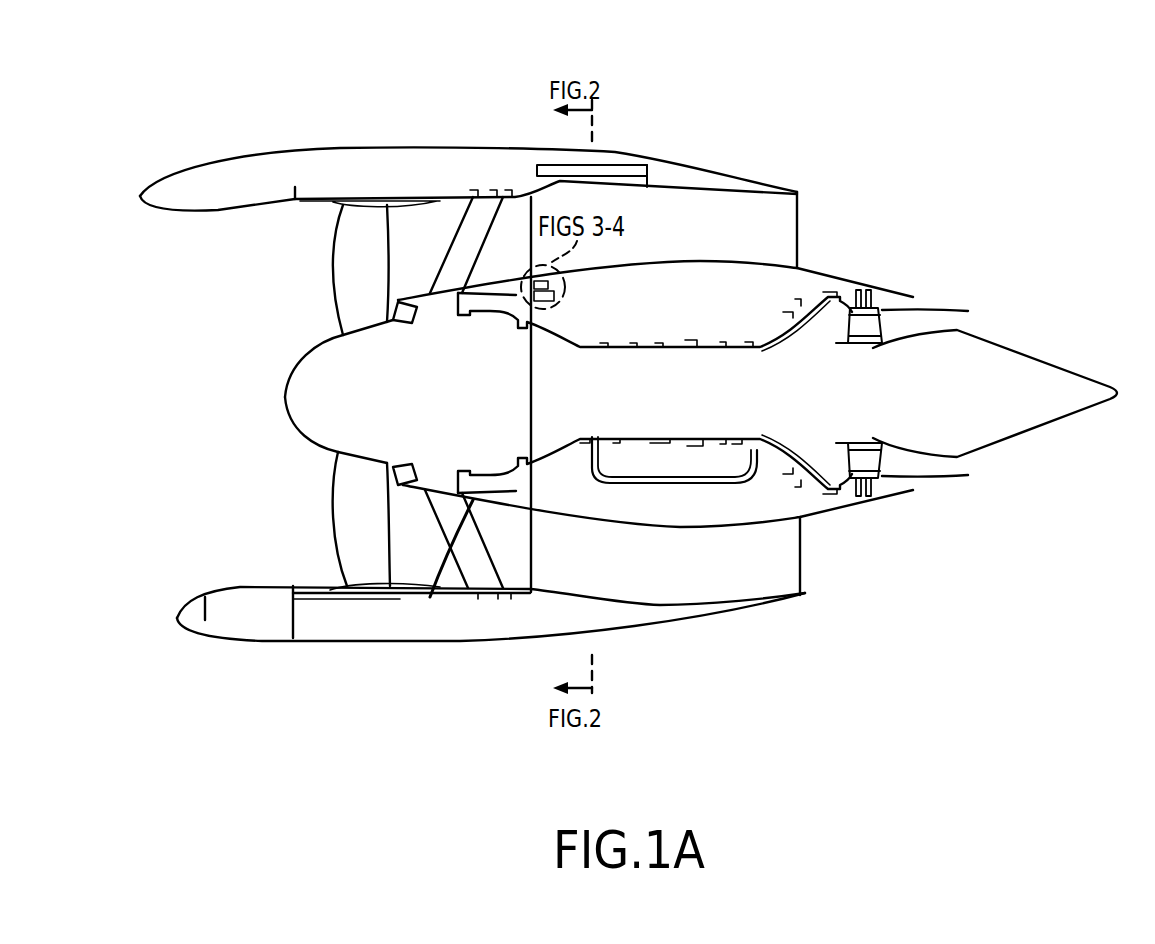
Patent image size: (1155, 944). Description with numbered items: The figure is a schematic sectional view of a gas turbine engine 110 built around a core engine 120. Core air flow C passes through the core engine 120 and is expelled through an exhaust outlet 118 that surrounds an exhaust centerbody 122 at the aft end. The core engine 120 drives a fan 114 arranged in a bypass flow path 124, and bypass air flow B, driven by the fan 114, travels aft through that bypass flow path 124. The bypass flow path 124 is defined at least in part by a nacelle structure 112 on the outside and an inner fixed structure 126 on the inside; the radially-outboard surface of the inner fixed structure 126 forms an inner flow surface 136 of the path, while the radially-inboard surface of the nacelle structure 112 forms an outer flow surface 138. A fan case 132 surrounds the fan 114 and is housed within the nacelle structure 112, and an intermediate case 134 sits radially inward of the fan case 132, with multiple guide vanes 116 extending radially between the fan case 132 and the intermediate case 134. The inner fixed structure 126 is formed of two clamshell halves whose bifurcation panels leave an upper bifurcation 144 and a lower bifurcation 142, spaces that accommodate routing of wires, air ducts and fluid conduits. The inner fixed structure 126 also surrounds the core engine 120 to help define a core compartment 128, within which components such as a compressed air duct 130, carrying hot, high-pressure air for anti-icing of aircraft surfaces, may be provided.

The gas turbine engine 110 is at (810, 97).
The nacelle structure 112 is at (330, 140).
The fan 114 is at (344, 511).
The guide vanes 116 is at (472, 555).
The exhaust outlet 118 is at (960, 320).
The core engine 120 is at (680, 332).
The exhaust centerbody 122 is at (1006, 427).
The bypass flow path 124 is at (693, 572).
The inner fixed structure 126 is at (680, 252).
The core compartment 128 is at (699, 520).
The compressed air duct 130 is at (763, 492).
The fan case 132 is at (325, 596).
The intermediate case 134 is at (440, 564).
The inner flow surface 136 is at (581, 520).
The outer flow surface 138 is at (592, 600).
The lower bifurcation 142 is at (776, 582).
The upper bifurcation 144 is at (800, 212).
The bypass air flow B is at (295, 256).
The core air flow C is at (380, 311).